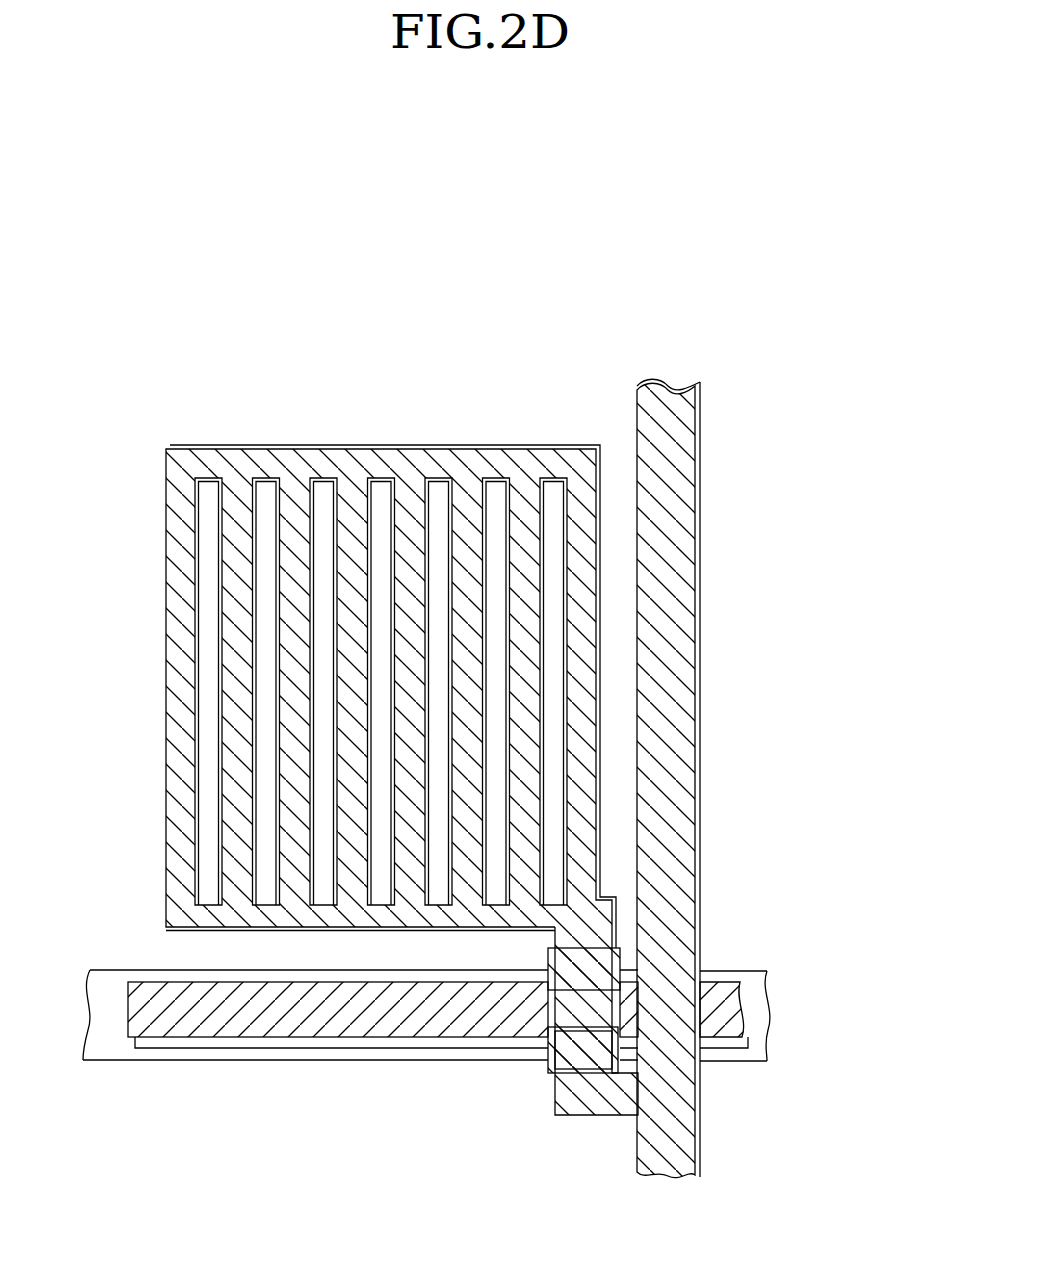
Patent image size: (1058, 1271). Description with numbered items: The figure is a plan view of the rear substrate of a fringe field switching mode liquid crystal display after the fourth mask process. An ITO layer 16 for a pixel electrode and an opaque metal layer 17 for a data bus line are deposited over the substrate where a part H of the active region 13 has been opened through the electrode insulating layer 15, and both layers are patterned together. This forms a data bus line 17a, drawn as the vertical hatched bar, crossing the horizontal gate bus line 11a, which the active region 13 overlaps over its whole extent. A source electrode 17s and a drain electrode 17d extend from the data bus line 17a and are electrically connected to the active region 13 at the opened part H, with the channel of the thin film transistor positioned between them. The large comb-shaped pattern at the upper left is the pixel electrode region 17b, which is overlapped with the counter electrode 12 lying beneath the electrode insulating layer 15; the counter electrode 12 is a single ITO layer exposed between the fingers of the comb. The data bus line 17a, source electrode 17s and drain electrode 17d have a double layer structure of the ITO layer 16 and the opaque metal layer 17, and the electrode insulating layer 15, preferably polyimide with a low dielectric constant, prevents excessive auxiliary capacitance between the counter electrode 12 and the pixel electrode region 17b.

The gate bus line 11a is at (281, 1040).
The counter electrode 12 is at (198, 531).
The active region 13 is at (767, 1027).
The electrode insulating layer 15 is at (395, 962).
The ITO layer for a pixel electrode 16 is at (560, 450).
The opaque metal layer for a data bus line 17 is at (413, 450).
The data bus line 17a is at (827, 572).
The pixel electrode region 17b is at (567, 352).
The drain electrode 17d is at (541, 1022).
The source electrode 17s is at (583, 1095).
The part of the active region H is at (566, 956).